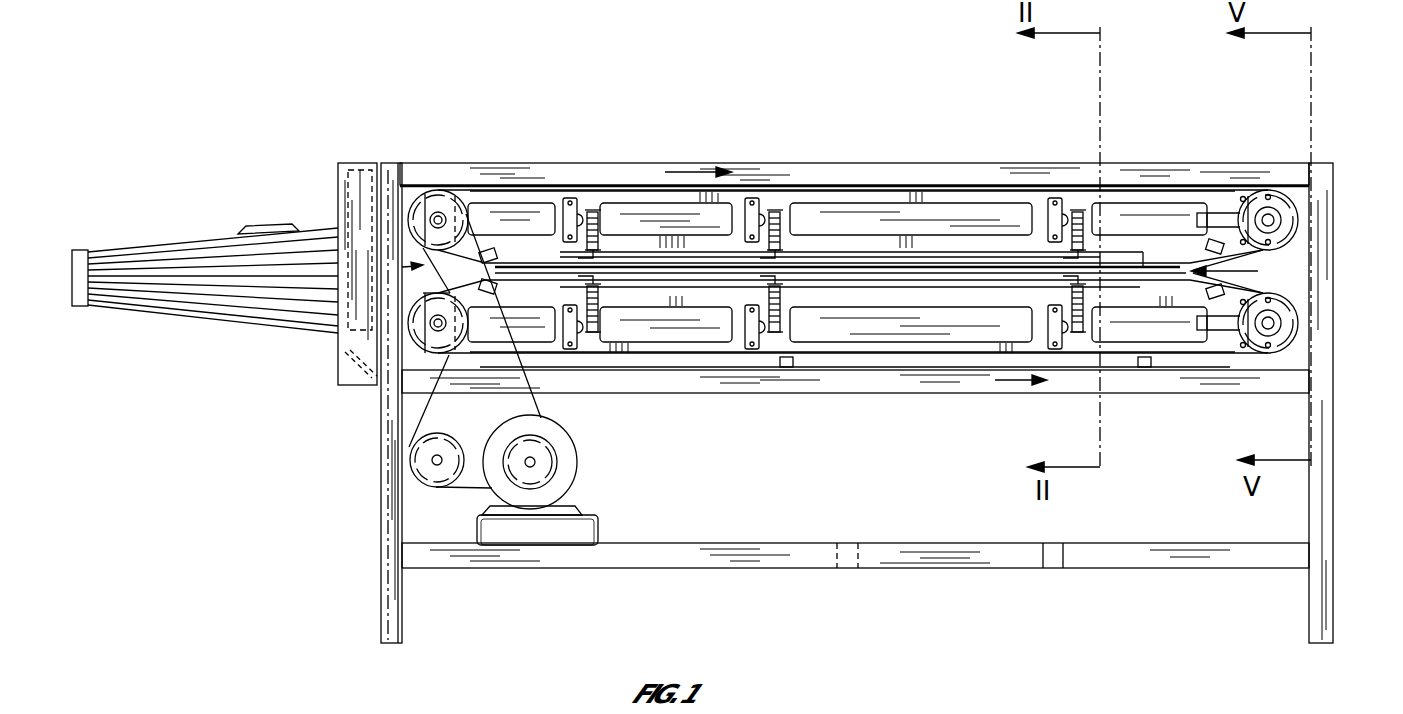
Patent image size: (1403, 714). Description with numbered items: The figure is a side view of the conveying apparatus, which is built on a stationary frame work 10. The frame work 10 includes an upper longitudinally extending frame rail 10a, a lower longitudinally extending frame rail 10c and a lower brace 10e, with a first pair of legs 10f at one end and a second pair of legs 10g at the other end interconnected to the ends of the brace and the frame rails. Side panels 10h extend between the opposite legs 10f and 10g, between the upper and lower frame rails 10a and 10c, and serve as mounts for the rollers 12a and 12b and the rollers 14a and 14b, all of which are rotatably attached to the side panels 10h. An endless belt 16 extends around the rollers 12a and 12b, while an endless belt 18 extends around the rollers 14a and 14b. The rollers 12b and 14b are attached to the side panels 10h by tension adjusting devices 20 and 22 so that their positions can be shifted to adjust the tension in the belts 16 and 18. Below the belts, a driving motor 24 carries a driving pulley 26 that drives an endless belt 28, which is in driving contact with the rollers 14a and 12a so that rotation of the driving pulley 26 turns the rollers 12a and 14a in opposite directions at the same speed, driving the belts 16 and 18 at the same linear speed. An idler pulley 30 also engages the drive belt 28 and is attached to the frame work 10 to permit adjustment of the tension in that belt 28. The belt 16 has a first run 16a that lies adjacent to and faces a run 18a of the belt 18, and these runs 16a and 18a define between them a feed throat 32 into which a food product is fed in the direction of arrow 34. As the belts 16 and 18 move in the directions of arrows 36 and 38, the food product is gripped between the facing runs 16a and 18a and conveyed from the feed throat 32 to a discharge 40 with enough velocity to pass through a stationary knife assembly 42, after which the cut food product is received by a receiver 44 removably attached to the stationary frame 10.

The stationary frame work 10 is at (376, 516).
The upper longitudinally extending frame rail 10a is at (623, 162).
The lower longitudinally extending frame rail 10c is at (947, 394).
The lower brace 10e is at (996, 570).
The first pair of legs 10f is at (383, 463).
The second pair of legs 10g is at (1322, 447).
The side panels 10h is at (862, 194).
The roller 12a is at (437, 196).
The roller 12b is at (1262, 194).
The roller 14a is at (432, 340).
The roller 14b is at (1285, 335).
The endless belt 16 is at (800, 162).
The first run 16a is at (968, 196).
The endless belt 18 is at (752, 369).
The run 18a is at (848, 289).
The tension adjusting device 20 is at (1220, 213).
The tension adjusting device 22 is at (1223, 330).
The driving motor 24 is at (575, 465).
The driving pulley 26 is at (531, 478).
The endless belt 28 is at (466, 489).
The idler pulley 30 is at (437, 478).
The feed throat 32 is at (1270, 281).
The arrow 34 is at (1243, 268).
The arrow 36 is at (694, 161).
The arrow 38 is at (1016, 392).
The discharge 40 is at (366, 232).
The stationary knife assembly 42 is at (335, 240).
The receiver 44 is at (150, 316).